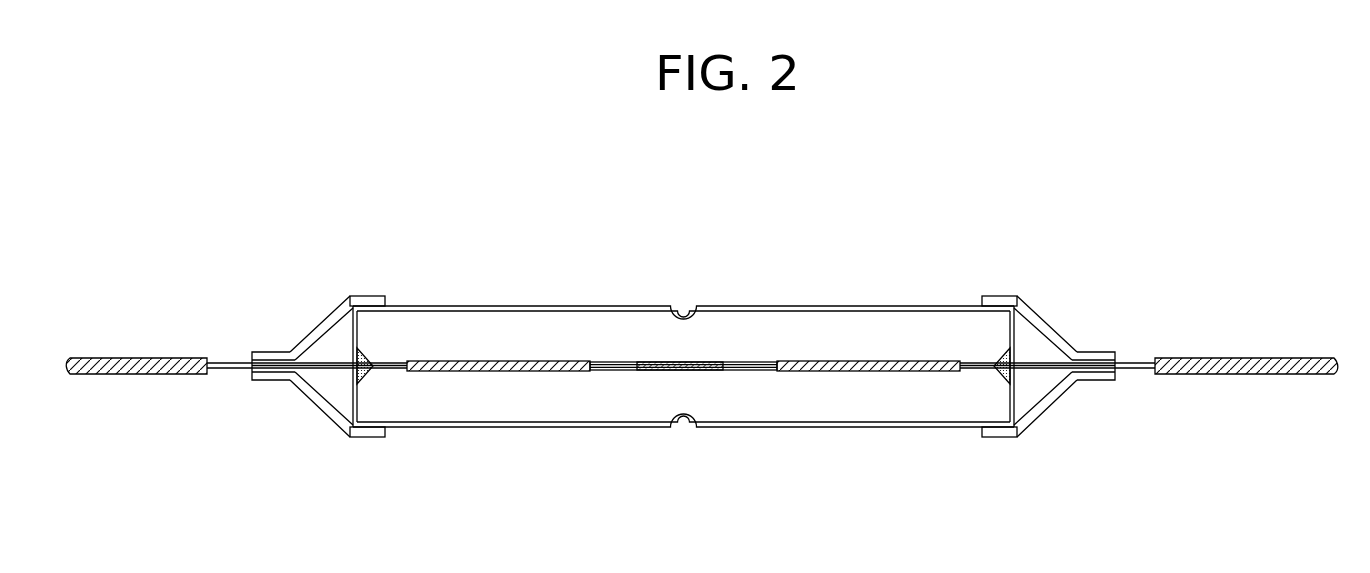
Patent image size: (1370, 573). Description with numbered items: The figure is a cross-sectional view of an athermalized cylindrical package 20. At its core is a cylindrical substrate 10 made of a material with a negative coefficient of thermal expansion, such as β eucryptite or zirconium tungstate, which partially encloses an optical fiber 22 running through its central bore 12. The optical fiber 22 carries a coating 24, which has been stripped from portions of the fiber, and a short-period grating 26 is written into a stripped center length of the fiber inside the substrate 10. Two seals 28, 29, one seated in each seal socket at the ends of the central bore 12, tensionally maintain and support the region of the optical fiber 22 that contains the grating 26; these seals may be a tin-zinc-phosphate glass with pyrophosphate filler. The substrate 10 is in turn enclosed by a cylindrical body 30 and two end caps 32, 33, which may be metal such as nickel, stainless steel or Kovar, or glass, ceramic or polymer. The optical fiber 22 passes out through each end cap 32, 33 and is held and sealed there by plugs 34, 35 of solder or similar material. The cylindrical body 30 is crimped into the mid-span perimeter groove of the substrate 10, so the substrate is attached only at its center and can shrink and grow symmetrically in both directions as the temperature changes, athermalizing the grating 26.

The cylindrical substrate 10 is at (398, 397).
The central bore 12 is at (743, 371).
The athermalized cylindrical package 20 is at (960, 181).
The optical fiber 22 is at (228, 371).
The coating 24 is at (80, 375).
The short-period grating 26 is at (668, 371).
The seal 28 is at (368, 360).
The seal 29 is at (1015, 361).
The cylindrical body 30 is at (818, 306).
The end cap 32 is at (347, 437).
The end cap 33 is at (1030, 305).
The plug 34 is at (256, 354).
The plug 35 is at (1090, 382).